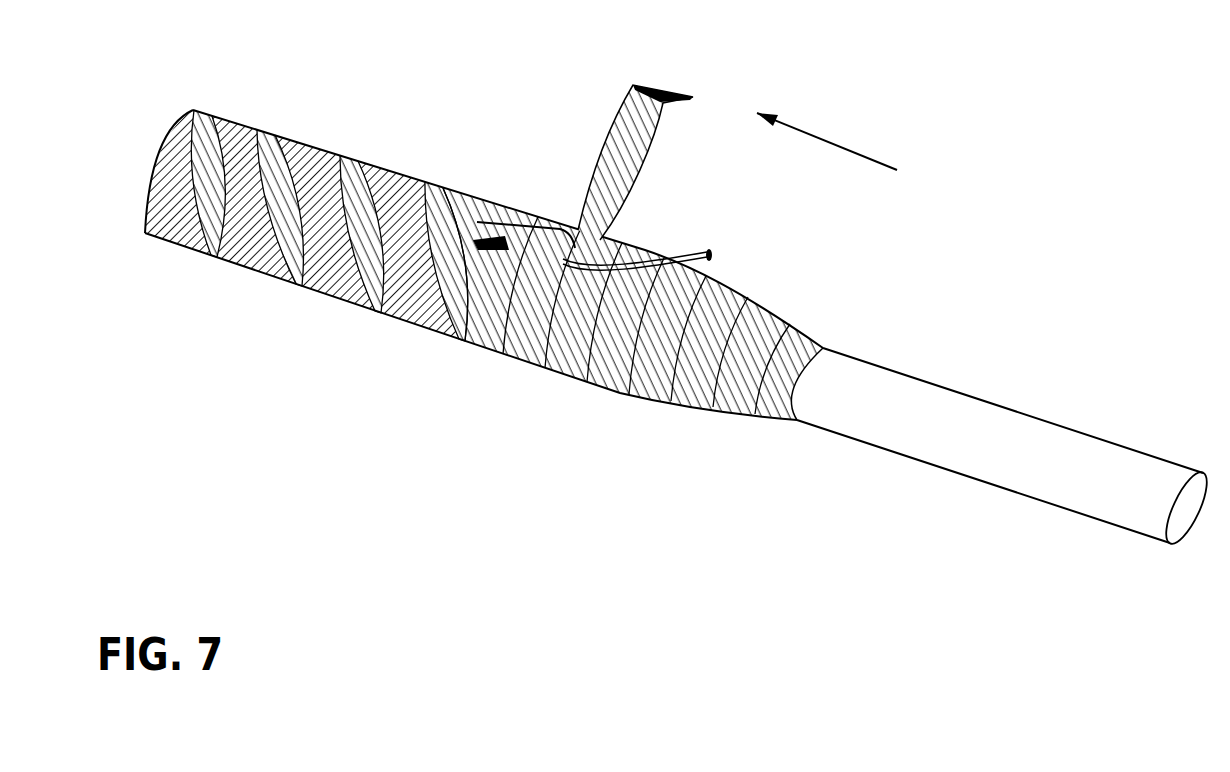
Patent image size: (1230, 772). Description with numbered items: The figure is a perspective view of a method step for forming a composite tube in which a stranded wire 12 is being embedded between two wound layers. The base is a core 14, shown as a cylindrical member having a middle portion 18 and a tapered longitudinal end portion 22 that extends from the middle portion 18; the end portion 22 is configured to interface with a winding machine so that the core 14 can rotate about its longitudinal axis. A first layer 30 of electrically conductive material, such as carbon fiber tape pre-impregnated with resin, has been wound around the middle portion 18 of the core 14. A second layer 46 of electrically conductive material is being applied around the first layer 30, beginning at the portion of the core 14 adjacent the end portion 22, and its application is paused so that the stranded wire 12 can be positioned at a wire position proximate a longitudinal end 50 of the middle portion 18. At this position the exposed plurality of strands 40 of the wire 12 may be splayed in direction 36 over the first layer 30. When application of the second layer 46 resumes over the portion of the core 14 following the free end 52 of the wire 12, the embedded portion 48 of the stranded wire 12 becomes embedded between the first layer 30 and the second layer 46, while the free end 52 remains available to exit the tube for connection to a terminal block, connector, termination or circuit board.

The stranded wire 12 is at (708, 265).
The core 14 is at (222, 115).
The middle portion 18 is at (318, 143).
The longitudinal end portion 22 is at (985, 417).
The first layer 30 is at (395, 167).
The direction 36 is at (830, 141).
The plurality of strands 40 is at (465, 340).
The second layer 46 is at (640, 243).
The embedded portion 48 is at (520, 207).
The longitudinal end 50 is at (593, 342).
The free end 52 is at (677, 250).